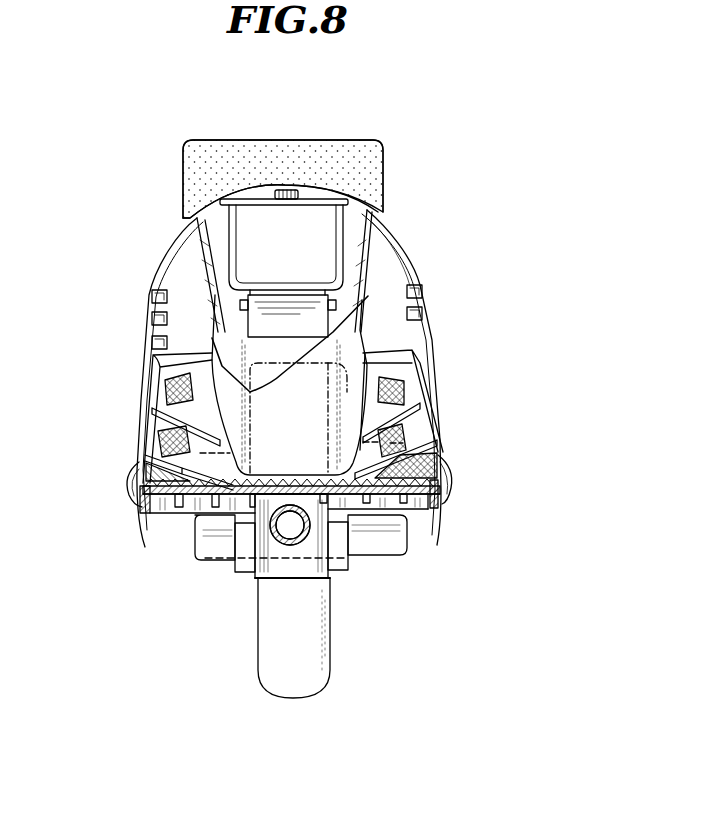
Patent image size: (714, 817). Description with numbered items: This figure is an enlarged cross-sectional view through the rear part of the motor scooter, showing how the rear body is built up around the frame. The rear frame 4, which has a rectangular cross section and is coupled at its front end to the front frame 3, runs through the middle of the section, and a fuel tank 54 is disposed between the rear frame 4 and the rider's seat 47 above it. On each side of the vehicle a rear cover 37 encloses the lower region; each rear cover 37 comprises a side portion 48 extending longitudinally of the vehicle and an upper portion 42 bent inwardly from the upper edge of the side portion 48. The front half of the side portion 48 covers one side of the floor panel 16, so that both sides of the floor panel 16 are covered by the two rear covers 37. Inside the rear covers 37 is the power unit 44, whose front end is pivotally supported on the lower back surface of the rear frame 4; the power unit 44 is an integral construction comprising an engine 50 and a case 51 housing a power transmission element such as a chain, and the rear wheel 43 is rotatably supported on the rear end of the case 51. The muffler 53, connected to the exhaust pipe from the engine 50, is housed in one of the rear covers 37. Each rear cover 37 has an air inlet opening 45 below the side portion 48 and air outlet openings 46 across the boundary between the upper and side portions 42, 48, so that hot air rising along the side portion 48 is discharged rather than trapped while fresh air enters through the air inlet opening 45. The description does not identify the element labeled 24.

The front frame 3 is at (281, 543).
The rear frame 4 is at (258, 340).
The floor panel 16 is at (210, 495).
The cup 24 is at (330, 222).
The rear cover 37 is at (148, 355).
The upper portion 42 is at (178, 265).
The rear wheel 43 is at (328, 663).
The power unit 44 is at (370, 462).
The air inlet opening 45 is at (130, 488).
The air outlet openings 46 is at (153, 318).
The rider's seat 47 is at (303, 150).
The side portion 48 is at (160, 405).
The engine 50 is at (342, 388).
The case 51 is at (430, 457).
The muffler 53 is at (160, 430).
The fuel tank 54 is at (388, 258).